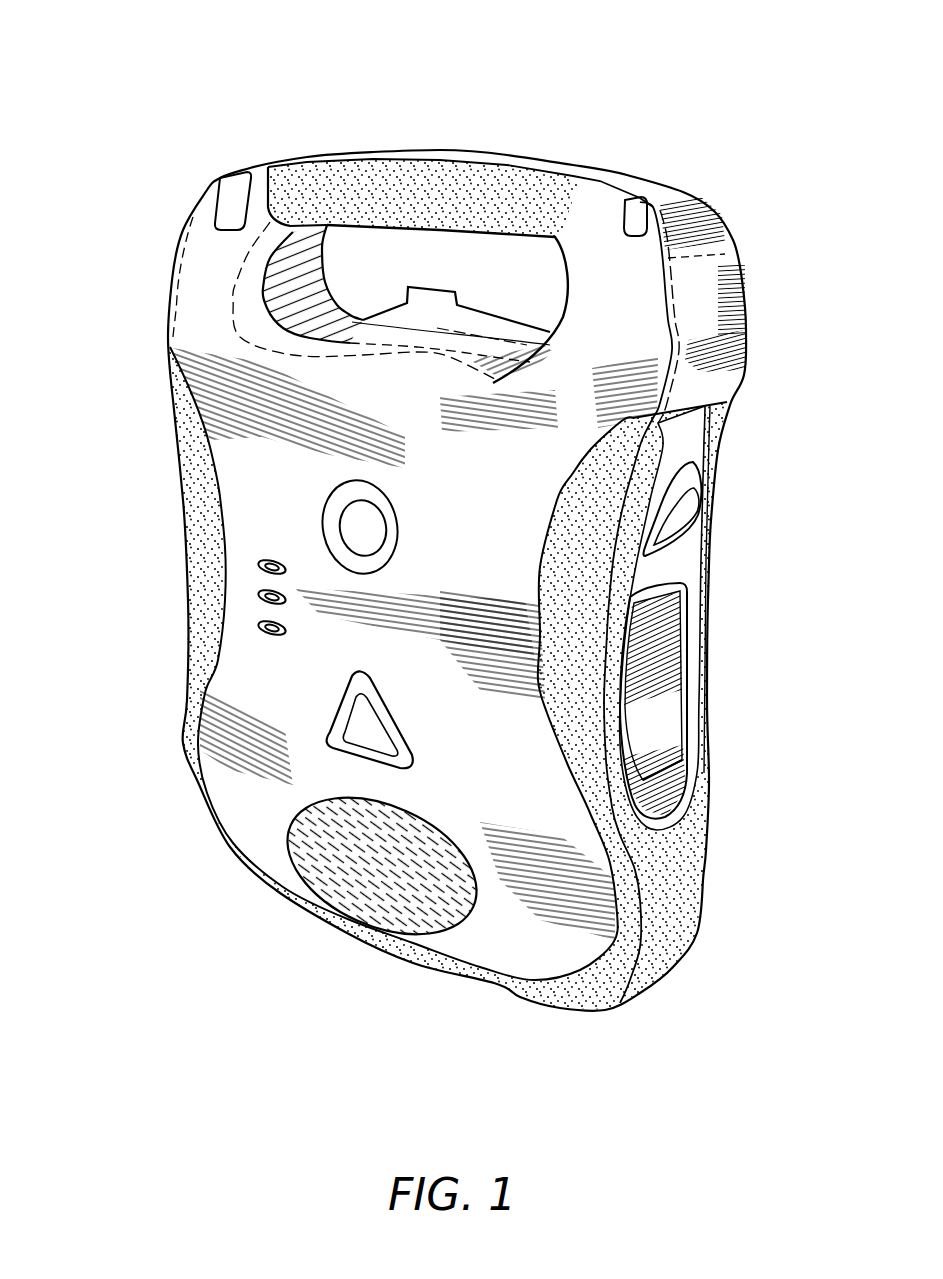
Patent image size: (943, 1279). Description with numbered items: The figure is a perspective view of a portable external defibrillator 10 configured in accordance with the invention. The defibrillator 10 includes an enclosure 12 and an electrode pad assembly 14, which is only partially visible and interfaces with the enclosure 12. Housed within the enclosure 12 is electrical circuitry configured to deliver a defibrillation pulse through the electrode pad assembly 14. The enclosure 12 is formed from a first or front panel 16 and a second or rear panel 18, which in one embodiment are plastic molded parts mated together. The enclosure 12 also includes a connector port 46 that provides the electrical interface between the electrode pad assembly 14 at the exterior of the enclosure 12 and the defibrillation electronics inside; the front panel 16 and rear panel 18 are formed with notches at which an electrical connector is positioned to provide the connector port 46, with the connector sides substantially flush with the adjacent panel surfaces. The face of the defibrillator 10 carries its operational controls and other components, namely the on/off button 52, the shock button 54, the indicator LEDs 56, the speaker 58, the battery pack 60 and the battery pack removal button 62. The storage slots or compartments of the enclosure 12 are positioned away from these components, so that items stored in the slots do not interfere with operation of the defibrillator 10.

The portable external defibrillator 10 is at (712, 92).
The enclosure 12 is at (764, 315).
The electrode pad assembly 14 is at (472, 290).
The front panel 16 is at (203, 320).
The rear panel 18 is at (738, 373).
The connector port 46 is at (218, 203).
The on/off button 52 is at (397, 510).
The shock button 54 is at (398, 712).
The indicator LEDs 56 is at (255, 550).
The speaker 58 is at (427, 832).
The battery pack 60 is at (652, 685).
The battery pack removal button 62 is at (681, 518).